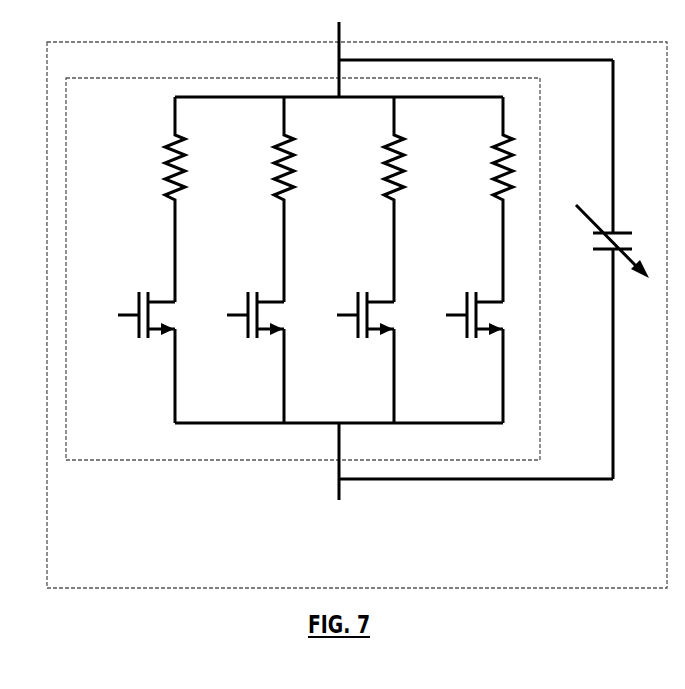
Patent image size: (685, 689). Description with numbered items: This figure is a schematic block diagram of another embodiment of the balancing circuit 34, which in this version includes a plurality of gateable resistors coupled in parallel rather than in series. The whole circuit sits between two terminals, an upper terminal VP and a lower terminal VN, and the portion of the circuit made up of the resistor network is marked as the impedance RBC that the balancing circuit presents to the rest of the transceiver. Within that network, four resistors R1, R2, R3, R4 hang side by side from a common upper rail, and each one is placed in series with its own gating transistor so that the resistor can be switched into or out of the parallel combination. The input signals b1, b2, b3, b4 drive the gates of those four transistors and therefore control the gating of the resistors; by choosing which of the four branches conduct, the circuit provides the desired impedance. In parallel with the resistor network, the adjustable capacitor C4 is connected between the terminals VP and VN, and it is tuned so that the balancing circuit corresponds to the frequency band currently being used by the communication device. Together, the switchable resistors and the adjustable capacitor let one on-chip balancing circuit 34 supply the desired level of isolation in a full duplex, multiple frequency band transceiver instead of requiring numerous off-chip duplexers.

The balancing circuit 34 is at (357, 294).
The balancing circuit impedance resistor RBC is at (303, 269).
The first gateable resistor R1 is at (156, 199).
The second gateable resistor R2 is at (265, 199).
The third gateable resistor R3 is at (375, 199).
The fourth gateable resistor R4 is at (484, 199).
The input signal b1 is at (134, 357).
The input signal b2 is at (243, 357).
The input signal b3 is at (353, 357).
The input signal b4 is at (462, 357).
The capacitor C4 is at (614, 269).
The positive voltage node VP is at (471, 48).
The negative voltage node VN is at (471, 475).